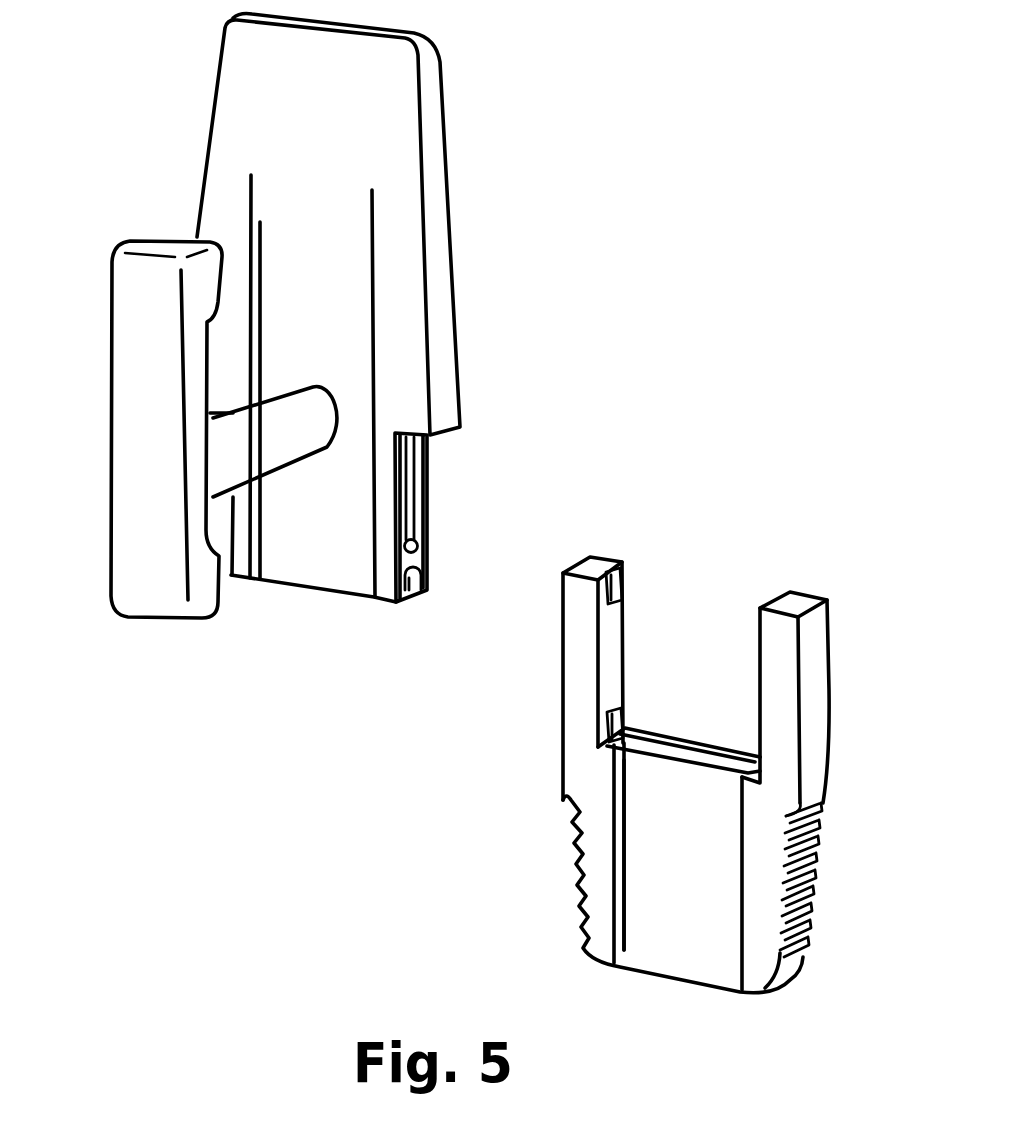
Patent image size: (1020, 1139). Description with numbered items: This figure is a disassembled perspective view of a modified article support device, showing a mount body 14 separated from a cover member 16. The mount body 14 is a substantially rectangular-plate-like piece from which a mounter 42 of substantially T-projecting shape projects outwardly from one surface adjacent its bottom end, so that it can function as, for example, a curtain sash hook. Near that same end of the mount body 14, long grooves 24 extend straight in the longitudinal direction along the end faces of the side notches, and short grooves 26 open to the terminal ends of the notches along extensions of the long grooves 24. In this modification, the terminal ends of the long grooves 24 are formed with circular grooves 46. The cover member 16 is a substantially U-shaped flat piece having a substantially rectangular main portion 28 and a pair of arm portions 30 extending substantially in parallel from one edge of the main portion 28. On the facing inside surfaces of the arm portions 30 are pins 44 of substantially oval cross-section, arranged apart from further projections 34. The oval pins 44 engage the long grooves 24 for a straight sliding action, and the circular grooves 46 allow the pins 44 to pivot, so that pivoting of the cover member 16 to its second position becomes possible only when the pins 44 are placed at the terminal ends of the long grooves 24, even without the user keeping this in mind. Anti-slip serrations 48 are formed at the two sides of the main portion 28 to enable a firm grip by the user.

The mount body 14 is at (437, 162).
The mounter 42 is at (128, 377).
The long grooves 24 is at (413, 490).
The circular grooves 46 is at (416, 545).
The short grooves 26 is at (415, 595).
The cover member 16 is at (637, 973).
The arm portions 30 is at (575, 672).
The pins 44 is at (618, 590).
The projections 34 is at (620, 723).
The main portion 28 is at (653, 877).
The anti-slip serrations 48 is at (813, 883).